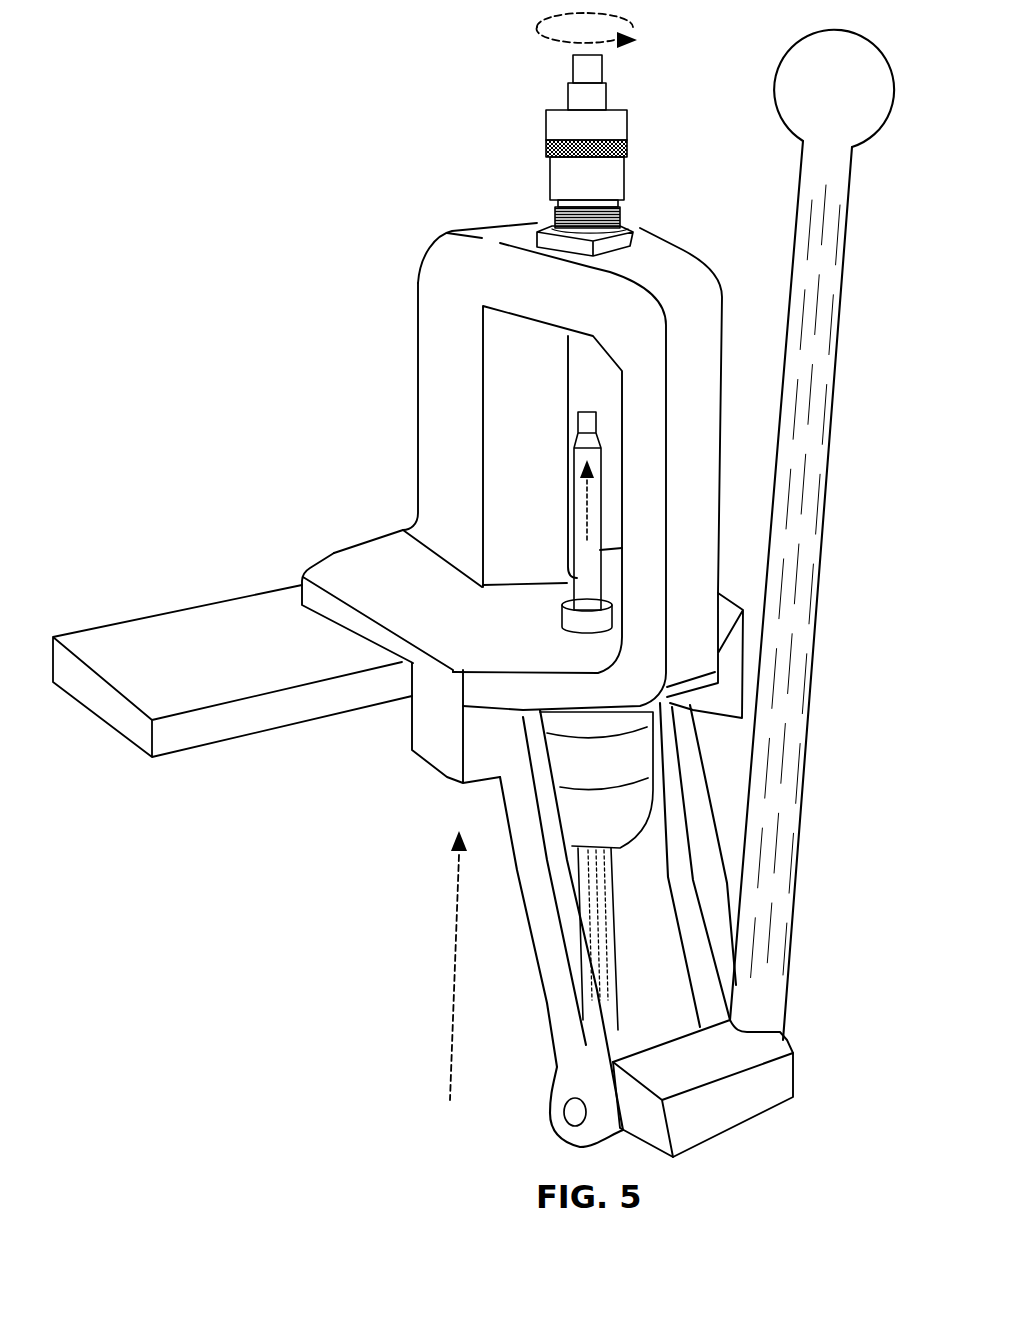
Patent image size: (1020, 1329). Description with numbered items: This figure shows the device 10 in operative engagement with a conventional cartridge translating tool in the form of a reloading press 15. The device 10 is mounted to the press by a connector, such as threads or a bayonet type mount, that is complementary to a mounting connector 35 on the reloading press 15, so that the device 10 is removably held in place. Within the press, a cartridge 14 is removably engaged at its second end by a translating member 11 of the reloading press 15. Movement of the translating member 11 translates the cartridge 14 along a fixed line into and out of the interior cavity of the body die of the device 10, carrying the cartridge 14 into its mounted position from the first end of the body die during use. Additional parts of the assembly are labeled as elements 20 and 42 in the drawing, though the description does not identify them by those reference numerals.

The device 10 is at (548, 133).
The translating member 11 is at (590, 617).
The cartridge 14 is at (577, 578).
The reloading press 15 is at (457, 362).
The die body 20 is at (607, 97).
The mounting connector 35 is at (622, 218).
The die cap 42 is at (575, 68).